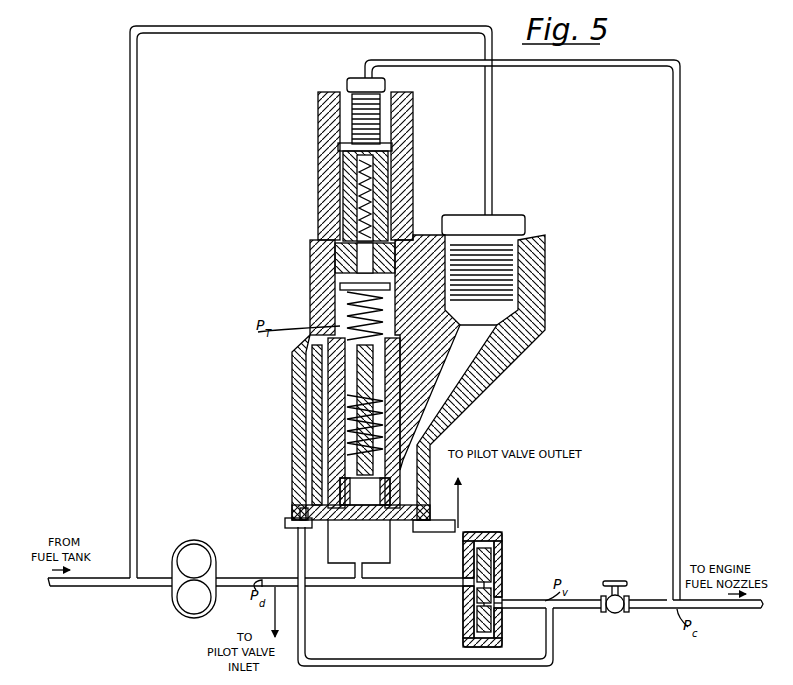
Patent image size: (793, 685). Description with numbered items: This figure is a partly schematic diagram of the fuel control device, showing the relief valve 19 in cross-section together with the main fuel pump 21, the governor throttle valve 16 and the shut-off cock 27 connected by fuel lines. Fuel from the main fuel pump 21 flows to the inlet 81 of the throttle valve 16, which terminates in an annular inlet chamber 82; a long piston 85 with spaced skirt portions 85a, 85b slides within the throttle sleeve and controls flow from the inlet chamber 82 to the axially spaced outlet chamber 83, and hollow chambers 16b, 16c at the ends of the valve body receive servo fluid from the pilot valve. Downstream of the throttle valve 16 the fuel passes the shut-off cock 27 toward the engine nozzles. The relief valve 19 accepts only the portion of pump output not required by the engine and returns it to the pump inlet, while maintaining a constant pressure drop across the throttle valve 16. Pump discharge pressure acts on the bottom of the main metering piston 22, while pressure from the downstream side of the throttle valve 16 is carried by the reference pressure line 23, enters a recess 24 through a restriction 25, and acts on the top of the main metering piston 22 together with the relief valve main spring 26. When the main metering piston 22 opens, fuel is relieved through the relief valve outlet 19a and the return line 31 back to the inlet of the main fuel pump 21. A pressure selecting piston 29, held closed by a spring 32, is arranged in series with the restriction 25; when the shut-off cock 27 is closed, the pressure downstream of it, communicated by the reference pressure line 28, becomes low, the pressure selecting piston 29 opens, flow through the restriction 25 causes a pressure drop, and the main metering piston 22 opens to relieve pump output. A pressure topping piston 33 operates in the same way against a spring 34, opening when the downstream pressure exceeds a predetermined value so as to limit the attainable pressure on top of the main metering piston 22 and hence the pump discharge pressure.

The throttle valve 16 is at (506, 574).
The hollow chamber 16b is at (480, 532).
The hollow chamber 16c is at (498, 641).
The relief valve 19 is at (316, 224).
The relief valve outlet 19a is at (450, 355).
The main fuel pump 21 is at (212, 512).
The main metering piston 22 is at (385, 420).
The reference pressure line 23 is at (378, 645).
The recess 24 is at (305, 413).
The restriction 25 is at (300, 514).
The relief valve main spring 26 is at (347, 309).
The shut-off cock 27 is at (608, 615).
The reference pressure line 28 is at (673, 160).
The pressure selecting piston 29 is at (352, 262).
The return line 31 is at (130, 248).
The spring 32 is at (385, 196).
The pressure topping piston 33 is at (332, 374).
The spring 34 is at (345, 444).
The inlet 81 is at (466, 590).
The inlet chamber 82 is at (494, 592).
The outlet chamber 83 is at (500, 611).
The long piston 85 is at (478, 600).
The skirt portion 85a is at (478, 560).
The skirt portion 85b is at (478, 626).